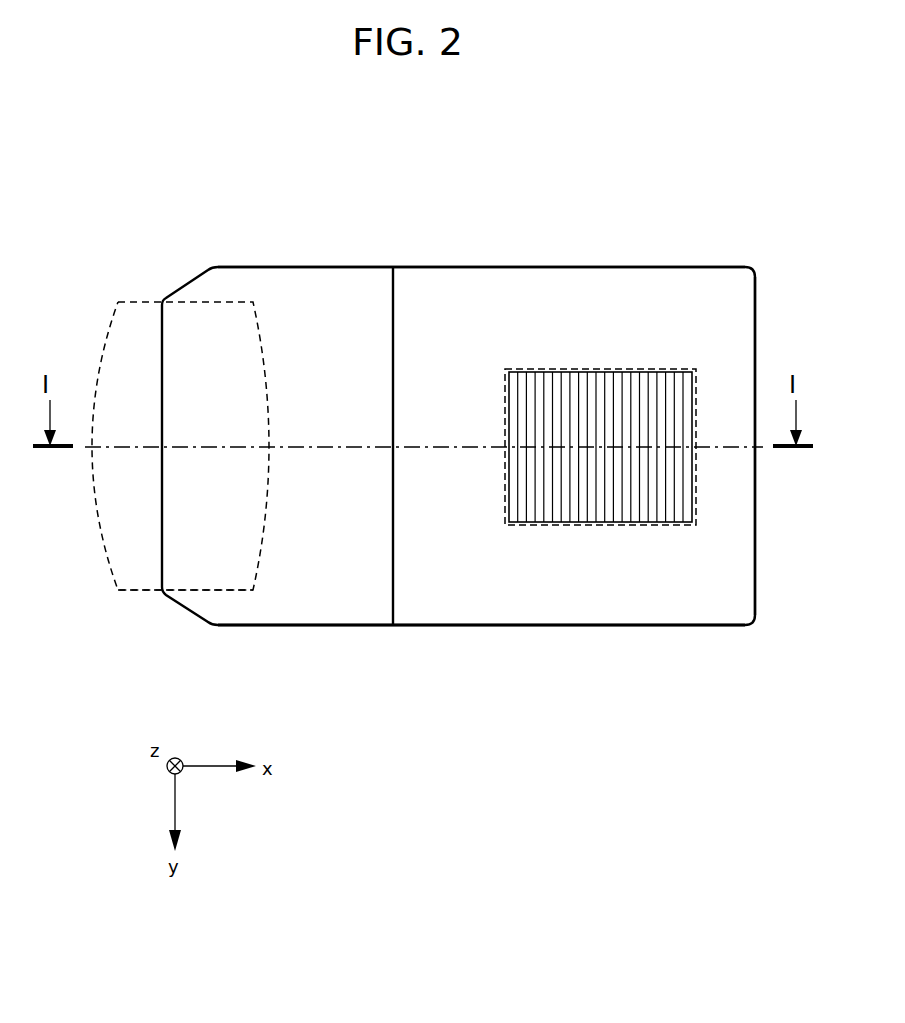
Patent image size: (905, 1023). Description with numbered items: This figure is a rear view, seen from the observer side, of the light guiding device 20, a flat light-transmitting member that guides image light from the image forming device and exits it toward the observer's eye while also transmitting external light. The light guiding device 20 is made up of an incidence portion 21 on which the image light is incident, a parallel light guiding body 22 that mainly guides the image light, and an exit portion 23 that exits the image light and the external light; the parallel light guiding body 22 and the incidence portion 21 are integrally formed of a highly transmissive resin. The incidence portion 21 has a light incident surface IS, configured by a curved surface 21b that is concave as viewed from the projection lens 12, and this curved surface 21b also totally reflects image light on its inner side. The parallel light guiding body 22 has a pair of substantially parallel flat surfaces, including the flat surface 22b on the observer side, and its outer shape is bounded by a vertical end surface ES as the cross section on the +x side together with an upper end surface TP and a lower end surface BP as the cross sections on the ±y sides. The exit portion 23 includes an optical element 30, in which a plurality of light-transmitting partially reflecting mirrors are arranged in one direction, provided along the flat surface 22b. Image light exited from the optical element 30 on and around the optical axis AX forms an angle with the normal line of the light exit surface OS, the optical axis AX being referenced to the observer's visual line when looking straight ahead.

The projection lens 12 is at (123, 300).
The light guiding device 20 is at (479, 434).
The incidence portion 21 is at (308, 297).
The parallel light guiding body 22 is at (452, 297).
The curved surface 21b is at (302, 560).
The flat surface 22b is at (466, 560).
The exit portion 23 is at (592, 370).
The optical element 30 is at (600, 529).
The upper end surface TP is at (545, 267).
The lower end surface BP is at (543, 627).
The vertical end surface ES is at (755, 352).
The light incident surface IS is at (253, 495).
The light exit surface OS is at (652, 505).
The optical axis AX is at (345, 447).